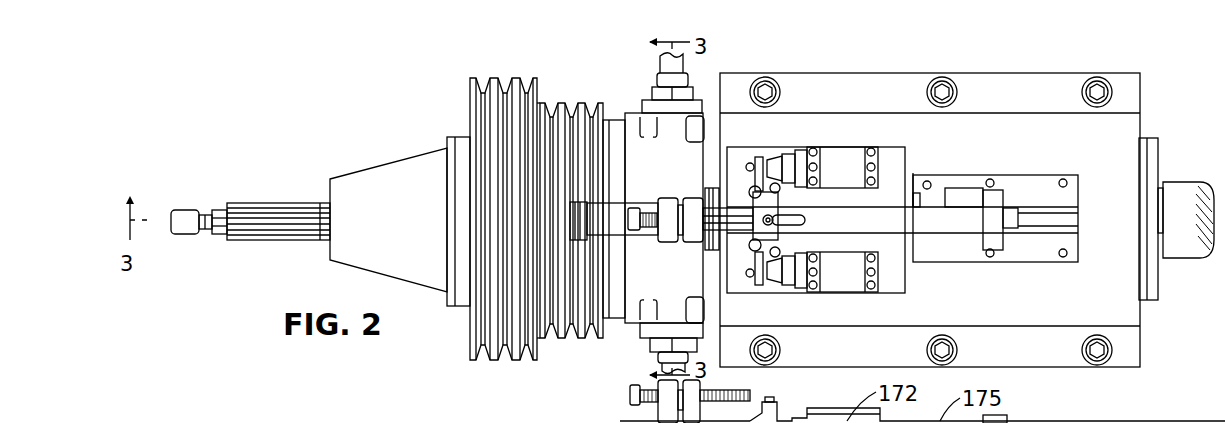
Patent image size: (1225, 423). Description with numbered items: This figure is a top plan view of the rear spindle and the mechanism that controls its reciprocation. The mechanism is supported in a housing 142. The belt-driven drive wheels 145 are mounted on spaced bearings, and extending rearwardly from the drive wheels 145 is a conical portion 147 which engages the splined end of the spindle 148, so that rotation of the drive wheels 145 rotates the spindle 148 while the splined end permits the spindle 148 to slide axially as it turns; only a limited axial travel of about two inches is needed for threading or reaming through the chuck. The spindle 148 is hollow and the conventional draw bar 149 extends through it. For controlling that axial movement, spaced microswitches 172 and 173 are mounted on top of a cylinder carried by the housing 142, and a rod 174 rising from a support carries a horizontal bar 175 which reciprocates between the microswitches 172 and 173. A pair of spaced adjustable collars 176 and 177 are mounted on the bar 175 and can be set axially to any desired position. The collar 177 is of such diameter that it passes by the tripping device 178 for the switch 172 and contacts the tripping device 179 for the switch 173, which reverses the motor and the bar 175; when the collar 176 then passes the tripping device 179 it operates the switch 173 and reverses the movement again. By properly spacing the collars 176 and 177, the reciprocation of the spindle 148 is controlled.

The housing 142 is at (1139, 333).
The drive wheels 145 is at (510, 363).
The conical portion 147 is at (422, 272).
The spindle 148 is at (267, 227).
The draw bar 149 is at (186, 233).
The microswitch 172 is at (828, 282).
The microswitch 173 is at (822, 148).
The rod 174 is at (993, 197).
The horizontal bar 175 is at (918, 217).
The adjustable collar 176 is at (703, 243).
The adjustable collar 177 is at (773, 205).
The tripping device 178 is at (779, 251).
The tripping device 179 is at (753, 189).